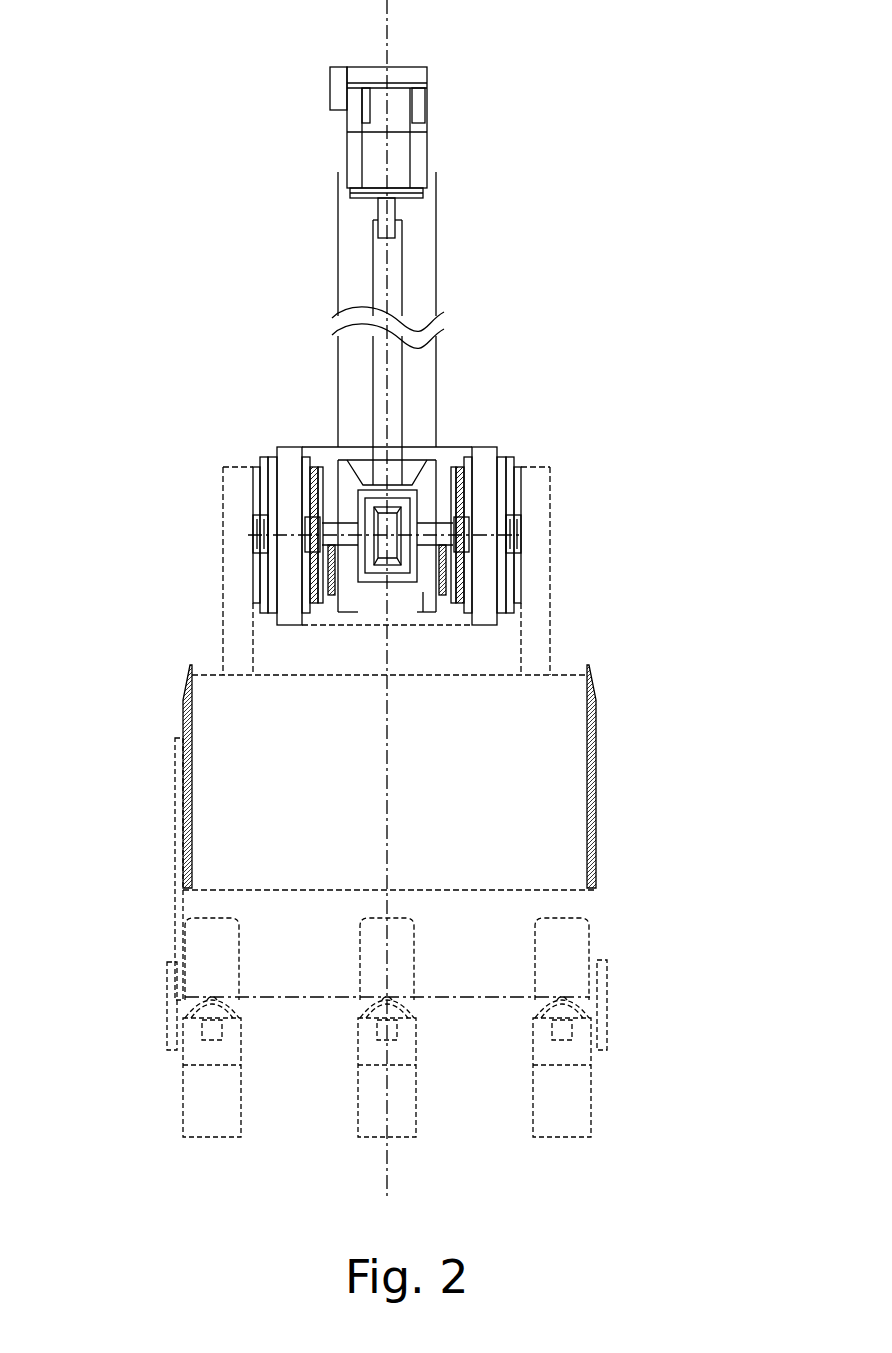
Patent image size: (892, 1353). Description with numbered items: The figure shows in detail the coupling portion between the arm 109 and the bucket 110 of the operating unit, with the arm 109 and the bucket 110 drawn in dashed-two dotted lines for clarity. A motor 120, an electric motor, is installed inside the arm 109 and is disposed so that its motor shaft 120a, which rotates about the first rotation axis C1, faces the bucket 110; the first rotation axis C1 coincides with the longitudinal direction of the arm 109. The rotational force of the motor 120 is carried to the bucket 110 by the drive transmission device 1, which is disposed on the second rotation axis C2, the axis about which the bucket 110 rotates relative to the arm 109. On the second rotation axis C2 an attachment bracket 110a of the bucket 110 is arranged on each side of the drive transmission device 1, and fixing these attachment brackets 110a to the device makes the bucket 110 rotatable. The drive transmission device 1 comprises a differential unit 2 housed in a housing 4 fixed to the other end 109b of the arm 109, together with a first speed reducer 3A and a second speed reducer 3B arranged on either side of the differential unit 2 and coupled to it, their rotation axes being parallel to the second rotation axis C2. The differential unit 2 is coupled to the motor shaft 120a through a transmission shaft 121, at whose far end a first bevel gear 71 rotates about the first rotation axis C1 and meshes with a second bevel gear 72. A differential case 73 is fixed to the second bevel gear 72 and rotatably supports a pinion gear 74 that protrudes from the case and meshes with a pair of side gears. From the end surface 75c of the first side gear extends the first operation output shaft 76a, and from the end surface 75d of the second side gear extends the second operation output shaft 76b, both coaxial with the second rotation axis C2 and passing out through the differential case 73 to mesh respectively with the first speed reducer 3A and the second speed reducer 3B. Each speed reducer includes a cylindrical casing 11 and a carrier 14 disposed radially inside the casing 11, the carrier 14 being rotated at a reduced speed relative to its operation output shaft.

The first rotation axis C1 is at (389, 12).
The motor 120 is at (428, 150).
The motor shaft 120a is at (377, 210).
The arm 109 is at (438, 233).
The transmission shaft 121 is at (373, 268).
The drive transmission device 1 is at (573, 333).
The differential unit 2 is at (446, 450).
The other end of the arm 109b is at (343, 447).
The first bevel gear 71 is at (407, 468).
The housing 4 is at (418, 583).
The pinion gear 74 is at (380, 500).
The second bevel gear 72 is at (421, 597).
The differential case 73 is at (364, 578).
The second rotation axis C2 is at (520, 529).
The first speed reducer 3A is at (532, 535).
The second speed reducer 3B is at (235, 594).
The end surface of the first side gear 75c is at (456, 590).
The end surface of the second side gear 75d is at (325, 605).
The first operation output shaft 76a is at (517, 505).
The second operation output shaft 76b is at (257, 505).
The casing 11 is at (290, 446).
The carrier 14 is at (252, 577).
The bucket 110 is at (183, 863).
The attachment bracket 110a is at (223, 561).